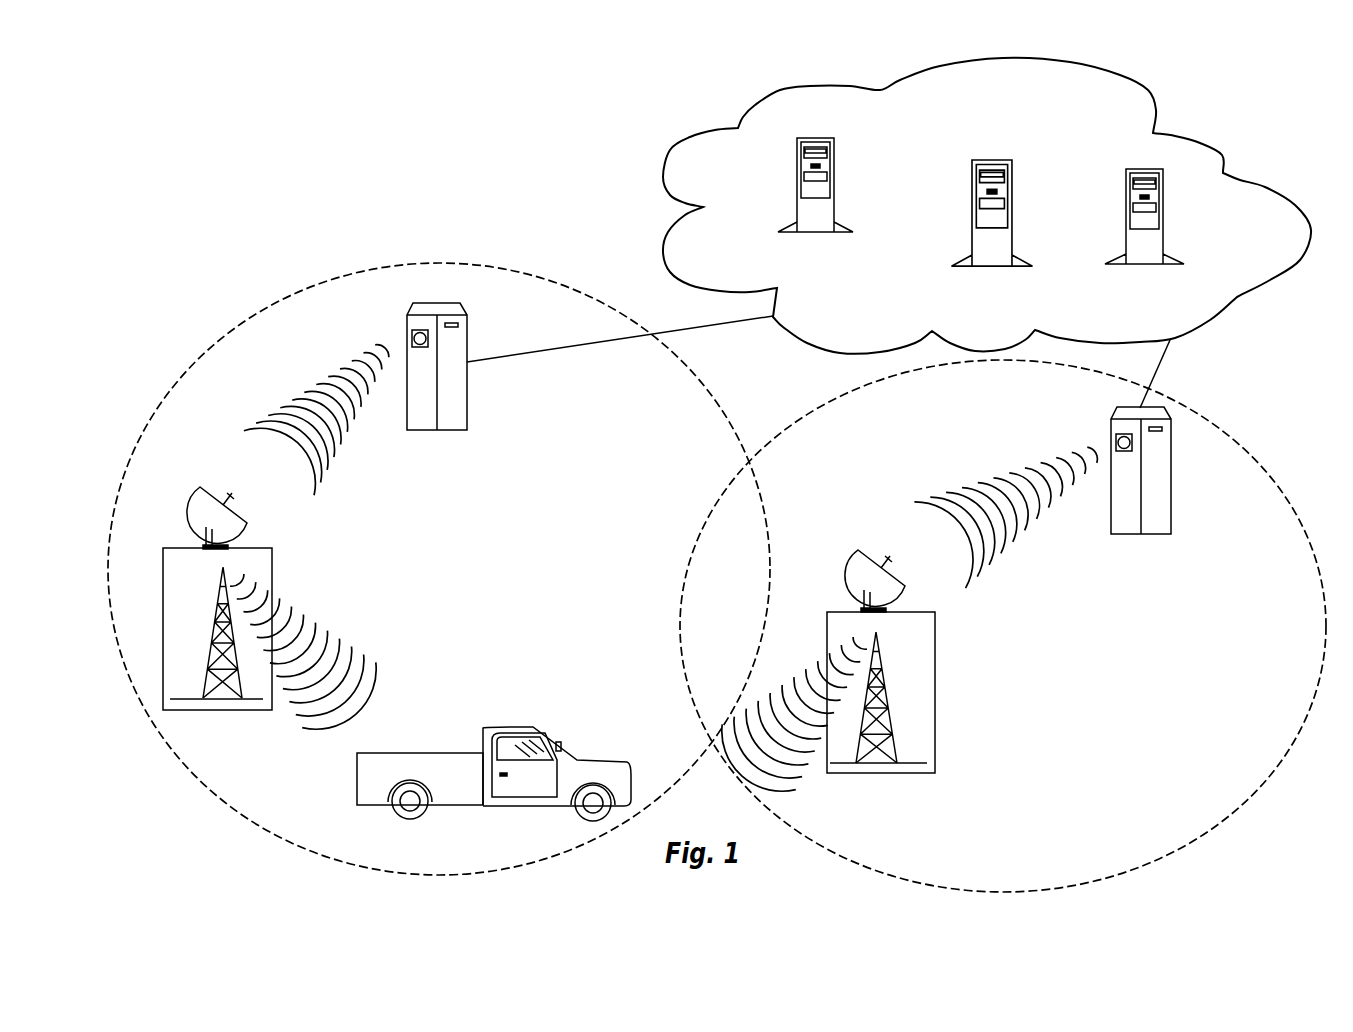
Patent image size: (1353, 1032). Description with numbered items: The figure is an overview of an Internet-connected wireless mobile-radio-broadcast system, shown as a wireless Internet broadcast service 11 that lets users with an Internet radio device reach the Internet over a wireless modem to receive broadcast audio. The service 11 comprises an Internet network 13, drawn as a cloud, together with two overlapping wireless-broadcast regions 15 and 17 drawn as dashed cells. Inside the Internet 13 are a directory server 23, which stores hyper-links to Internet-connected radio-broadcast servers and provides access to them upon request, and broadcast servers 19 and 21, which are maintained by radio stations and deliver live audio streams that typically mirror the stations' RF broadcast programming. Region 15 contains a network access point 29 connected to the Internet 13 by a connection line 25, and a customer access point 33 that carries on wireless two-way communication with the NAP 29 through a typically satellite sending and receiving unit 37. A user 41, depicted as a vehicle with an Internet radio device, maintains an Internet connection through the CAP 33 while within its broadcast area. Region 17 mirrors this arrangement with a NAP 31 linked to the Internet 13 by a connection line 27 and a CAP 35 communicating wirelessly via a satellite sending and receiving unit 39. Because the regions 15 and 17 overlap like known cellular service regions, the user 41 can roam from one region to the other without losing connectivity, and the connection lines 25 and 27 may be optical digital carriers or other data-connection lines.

The wireless Internet broadcast service 11 is at (396, 131).
The Internet network 13 is at (1248, 175).
The wireless-broadcast region 15 is at (325, 264).
The wireless-broadcast region 17 is at (1261, 473).
The broadcast server 19 is at (795, 197).
The broadcast server 21 is at (1165, 192).
The directory server 23 is at (1017, 236).
The connection line 25 is at (655, 350).
The connection line 27 is at (1157, 380).
The network access point (NAP) 29 is at (467, 398).
The network access point (NAP) 31 is at (1127, 408).
The customer access point (CAP) 33 is at (273, 590).
The customer access point (CAP) 35 is at (918, 713).
The satellite sending and receiving unit 37 is at (197, 510).
The satellite sending and receiving unit 39 is at (848, 563).
The user 41 is at (513, 715).